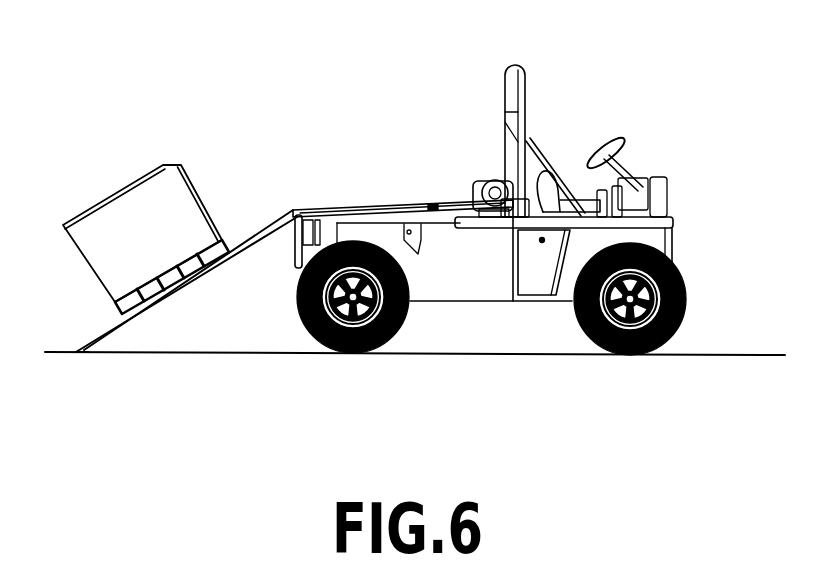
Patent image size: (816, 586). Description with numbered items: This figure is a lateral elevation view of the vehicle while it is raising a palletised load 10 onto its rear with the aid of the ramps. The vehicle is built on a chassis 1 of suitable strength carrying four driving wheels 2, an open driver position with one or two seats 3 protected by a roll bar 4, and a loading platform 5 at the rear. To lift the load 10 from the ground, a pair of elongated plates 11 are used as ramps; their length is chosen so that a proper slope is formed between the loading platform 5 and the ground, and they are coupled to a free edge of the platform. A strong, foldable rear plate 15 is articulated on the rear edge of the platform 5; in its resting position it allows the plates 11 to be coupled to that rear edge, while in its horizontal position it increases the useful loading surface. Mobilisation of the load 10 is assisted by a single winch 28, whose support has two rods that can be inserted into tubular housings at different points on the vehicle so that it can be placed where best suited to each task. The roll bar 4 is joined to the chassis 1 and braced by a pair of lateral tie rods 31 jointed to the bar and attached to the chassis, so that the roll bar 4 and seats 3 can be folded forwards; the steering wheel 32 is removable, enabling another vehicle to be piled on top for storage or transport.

The chassis 1 is at (545, 272).
The driving wheels 2 is at (330, 354).
The seats 3 is at (538, 175).
The roll bar 4 is at (527, 112).
The loading platform 5 is at (352, 210).
The palletised load 10 is at (130, 212).
The elongated plates 11 is at (160, 300).
The rear plate 15 is at (277, 222).
The winch 28 is at (485, 180).
The lateral tie rods 31 is at (553, 168).
The steering wheel 32 is at (623, 167).